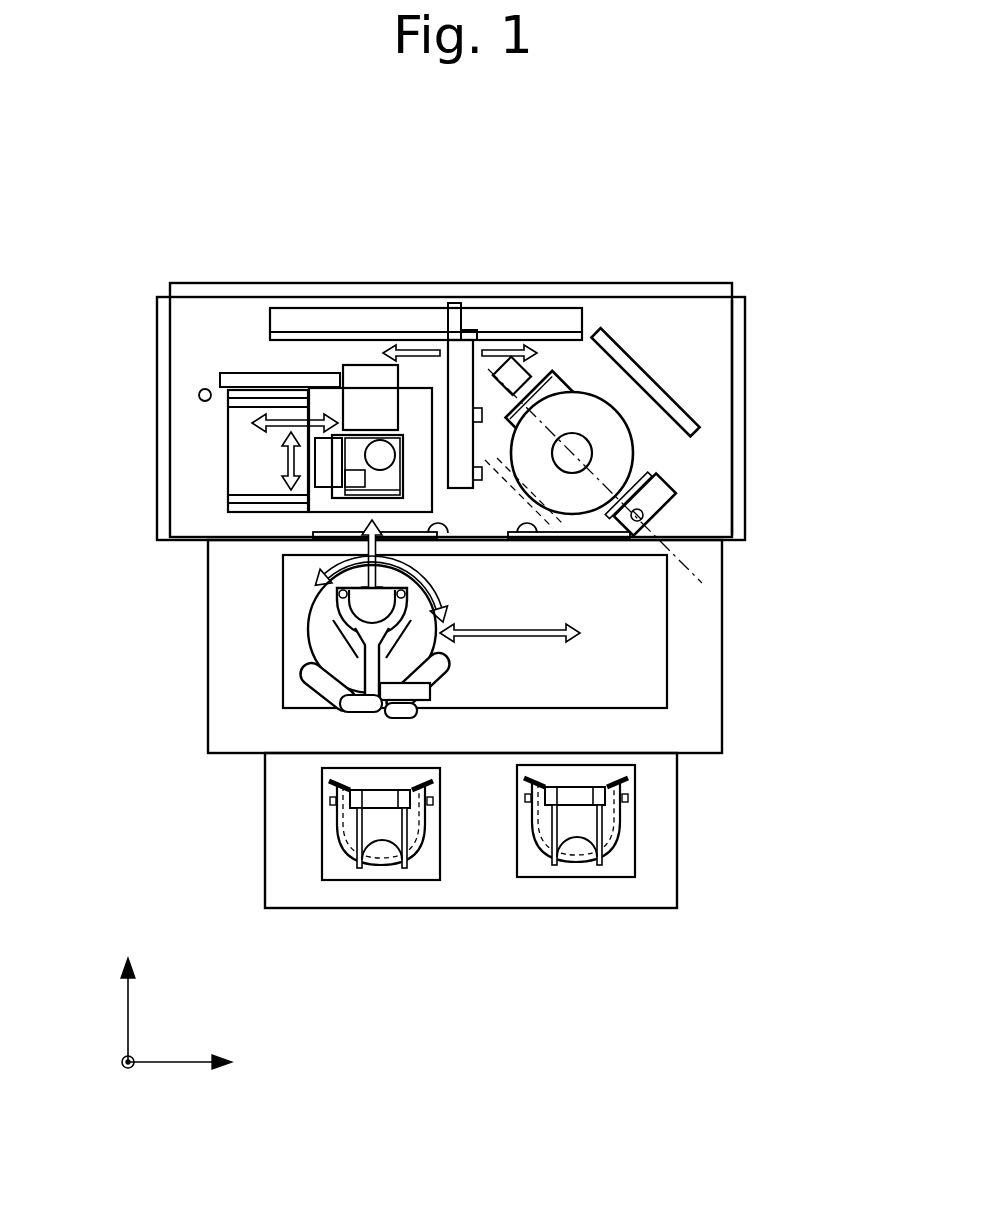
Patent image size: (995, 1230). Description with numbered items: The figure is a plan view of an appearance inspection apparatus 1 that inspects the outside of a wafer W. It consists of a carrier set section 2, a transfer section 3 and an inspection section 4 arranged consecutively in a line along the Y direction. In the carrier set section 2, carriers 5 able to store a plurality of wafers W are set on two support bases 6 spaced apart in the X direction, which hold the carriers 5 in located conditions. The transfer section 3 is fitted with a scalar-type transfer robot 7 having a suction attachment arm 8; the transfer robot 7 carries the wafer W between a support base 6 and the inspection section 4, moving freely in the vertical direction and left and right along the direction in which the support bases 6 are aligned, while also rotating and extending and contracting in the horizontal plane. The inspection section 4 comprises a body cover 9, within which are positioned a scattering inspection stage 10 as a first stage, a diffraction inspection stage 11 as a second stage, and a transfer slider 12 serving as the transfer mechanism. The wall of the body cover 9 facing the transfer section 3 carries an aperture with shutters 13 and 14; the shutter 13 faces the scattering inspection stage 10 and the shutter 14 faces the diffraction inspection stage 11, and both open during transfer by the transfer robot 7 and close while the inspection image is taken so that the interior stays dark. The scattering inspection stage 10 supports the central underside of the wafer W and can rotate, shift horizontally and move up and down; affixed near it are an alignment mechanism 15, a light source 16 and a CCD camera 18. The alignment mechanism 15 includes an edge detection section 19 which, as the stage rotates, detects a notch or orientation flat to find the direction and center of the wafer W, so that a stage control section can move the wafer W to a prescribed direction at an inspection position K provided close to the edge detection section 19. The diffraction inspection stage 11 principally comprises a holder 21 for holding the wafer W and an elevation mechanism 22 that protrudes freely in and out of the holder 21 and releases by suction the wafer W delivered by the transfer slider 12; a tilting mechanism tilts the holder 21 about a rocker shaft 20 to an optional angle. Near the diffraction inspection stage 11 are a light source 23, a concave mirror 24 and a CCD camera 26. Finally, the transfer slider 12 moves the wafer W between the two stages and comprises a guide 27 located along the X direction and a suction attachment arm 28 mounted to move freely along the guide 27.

The appearance inspection apparatus 1 is at (92, 609).
The carrier set section 2 is at (248, 806).
The transfer section 3 is at (194, 637).
The inspection section 4 is at (140, 390).
The carrier 5 is at (415, 858).
The support base 6 is at (337, 881).
The transfer robot 7 is at (306, 588).
The suction attachment arm 8 is at (334, 598).
The body cover 9 is at (746, 450).
The scattering inspection stage 10 is at (381, 460).
The diffraction inspection stage 11 is at (680, 480).
The transfer slider 12 is at (385, 295).
The shutter 13 is at (437, 521).
The shutter 14 is at (532, 536).
The alignment mechanism 15 is at (318, 382).
The light source 16 is at (240, 380).
The CCD camera 18 is at (205, 388).
The edge detection section 19 is at (370, 438).
The rocker shaft 20 is at (702, 580).
The holder 21 is at (628, 440).
The elevation mechanism 22 is at (617, 437).
The light source 23 is at (587, 438).
The concave mirror 24 is at (503, 488).
The CCD camera 26 is at (655, 500).
The guide 27 is at (540, 304).
The suction attachment arm 28 is at (420, 335).
The inspection position K is at (214, 450).
The wafer W is at (388, 862).